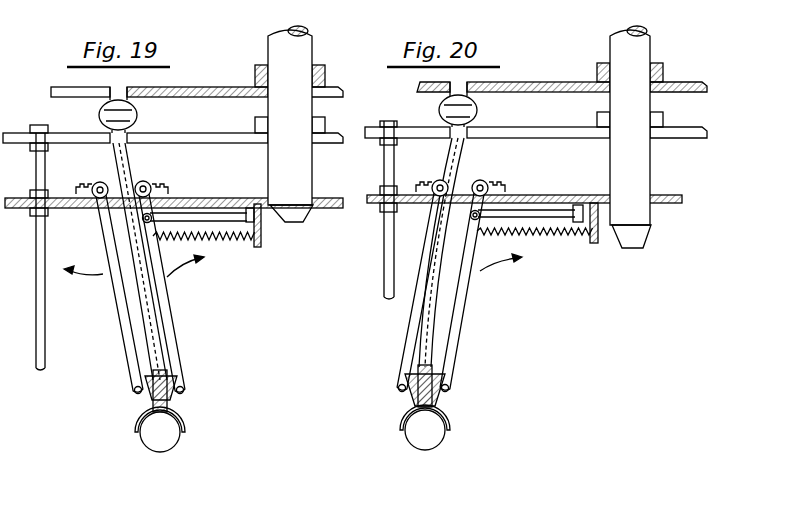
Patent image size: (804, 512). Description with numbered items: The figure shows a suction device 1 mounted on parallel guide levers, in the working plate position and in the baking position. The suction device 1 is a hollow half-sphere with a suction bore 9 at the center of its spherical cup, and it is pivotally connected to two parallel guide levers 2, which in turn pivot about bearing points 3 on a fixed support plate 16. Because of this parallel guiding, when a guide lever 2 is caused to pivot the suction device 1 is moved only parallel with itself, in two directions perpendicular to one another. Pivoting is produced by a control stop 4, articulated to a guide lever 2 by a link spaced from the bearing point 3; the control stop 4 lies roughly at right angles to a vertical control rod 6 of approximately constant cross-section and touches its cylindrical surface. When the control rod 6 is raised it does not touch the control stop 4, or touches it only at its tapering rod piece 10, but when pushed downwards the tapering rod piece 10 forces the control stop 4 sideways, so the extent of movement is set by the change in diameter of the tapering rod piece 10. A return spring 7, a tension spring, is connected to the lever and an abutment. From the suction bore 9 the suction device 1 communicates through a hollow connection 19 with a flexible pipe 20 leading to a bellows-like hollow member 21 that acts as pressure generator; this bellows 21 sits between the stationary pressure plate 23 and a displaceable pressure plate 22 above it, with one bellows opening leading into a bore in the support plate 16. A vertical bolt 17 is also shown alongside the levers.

In FIG. 19, the suction device 1 is at (184, 428).
In FIG. 20, the suction device 1 is at (402, 427).
In FIG. 19, the guide lever 2 is at (130, 345).
In FIG. 20, the guide lever 2 is at (410, 345).
In FIG. 19, the bearing point 3 is at (93, 183).
In FIG. 20, the bearing point 3 is at (435, 182).
In FIG. 19, the control stop 4 is at (210, 216).
In FIG. 20, the control stop 4 is at (543, 214).
In FIG. 19, the control rod 6 is at (298, 58).
In FIG. 20, the control rod 6 is at (635, 57).
In FIG. 19, the return spring 7 is at (212, 240).
In FIG. 20, the return spring 7 is at (541, 236).
In FIG. 19, the suction bore 9 is at (139, 422).
In FIG. 20, the suction bore 9 is at (441, 420).
In FIG. 19, the tapering rod piece 10 is at (295, 212).
In FIG. 20, the tapering rod piece 10 is at (637, 237).
In FIG. 19, the support plate 16 is at (72, 208).
In FIG. 19, the bolt 17 is at (42, 313).
In FIG. 20, the bolt 17 is at (388, 272).
In FIG. 19, the hollow connection 19 is at (167, 400).
In FIG. 20, the hollow connection 19 is at (418, 400).
In FIG. 19, the flexible pipe 20 is at (137, 293).
In FIG. 20, the flexible pipe 20 is at (435, 303).
In FIG. 19, the bellows-like hollow member 21 is at (138, 113).
In FIG. 20, the bellows-like hollow member 21 is at (478, 110).
In FIG. 19, the pressure plate 22 is at (197, 92).
In FIG. 19, the stationary pressure plate 23 is at (62, 140).
In FIG. 20, the stationary pressure plate 23 is at (410, 135).